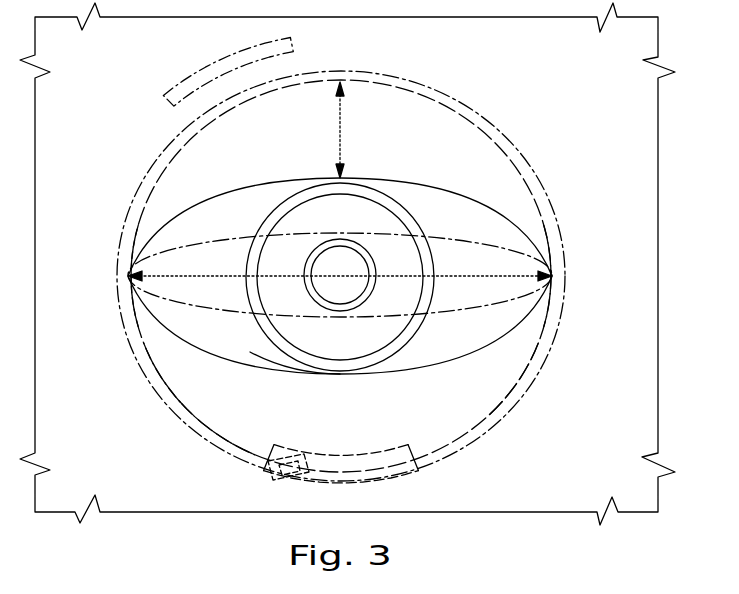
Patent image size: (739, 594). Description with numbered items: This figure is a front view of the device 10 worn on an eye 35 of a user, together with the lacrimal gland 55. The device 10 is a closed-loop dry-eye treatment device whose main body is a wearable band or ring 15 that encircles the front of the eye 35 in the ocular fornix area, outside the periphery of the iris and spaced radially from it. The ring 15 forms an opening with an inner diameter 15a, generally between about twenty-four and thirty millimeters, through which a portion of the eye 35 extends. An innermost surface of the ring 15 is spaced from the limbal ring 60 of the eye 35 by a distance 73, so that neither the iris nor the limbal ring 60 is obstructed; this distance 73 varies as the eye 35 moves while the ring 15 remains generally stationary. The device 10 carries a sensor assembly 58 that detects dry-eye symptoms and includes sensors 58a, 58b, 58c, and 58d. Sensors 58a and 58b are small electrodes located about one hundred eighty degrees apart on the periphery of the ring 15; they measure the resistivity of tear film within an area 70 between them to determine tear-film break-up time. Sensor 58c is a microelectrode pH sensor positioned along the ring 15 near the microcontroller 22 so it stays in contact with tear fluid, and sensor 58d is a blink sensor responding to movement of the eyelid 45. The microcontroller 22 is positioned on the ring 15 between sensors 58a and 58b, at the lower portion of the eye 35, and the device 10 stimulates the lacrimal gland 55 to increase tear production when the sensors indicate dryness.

The device 10 is at (163, 138).
The ring 15 is at (417, 75).
The inner diameter 15a is at (555, 250).
The microcontroller 22 is at (350, 455).
The eye 35 is at (262, 356).
The eyelid 45 is at (241, 197).
The lacrimal gland 55 is at (193, 76).
The sensor assembly 58 is at (137, 422).
The sensor 58a is at (560, 296).
The sensor 58b is at (128, 300).
The sensor 58c is at (309, 455).
The sensor 58d is at (140, 366).
The limbal ring 60 is at (381, 190).
The area 70 is at (462, 236).
The distance 73 is at (338, 134).